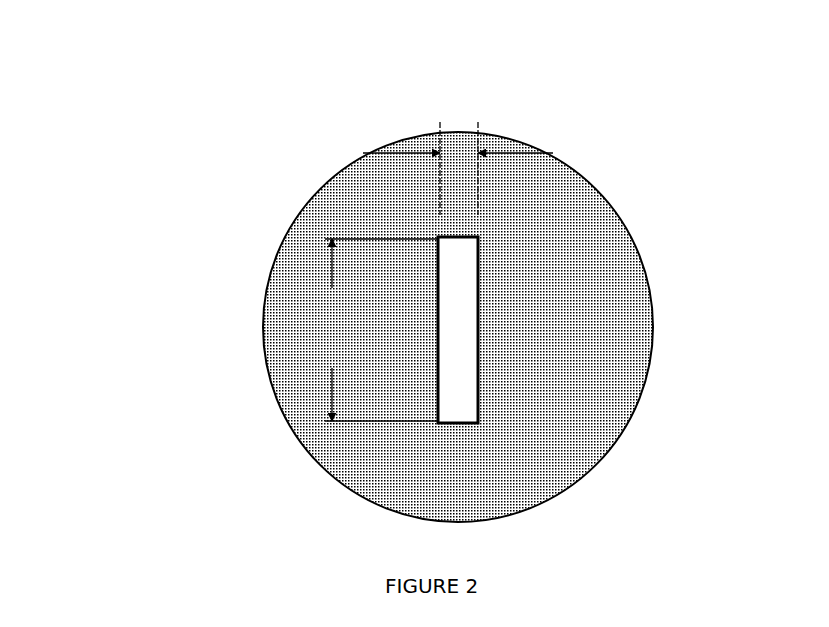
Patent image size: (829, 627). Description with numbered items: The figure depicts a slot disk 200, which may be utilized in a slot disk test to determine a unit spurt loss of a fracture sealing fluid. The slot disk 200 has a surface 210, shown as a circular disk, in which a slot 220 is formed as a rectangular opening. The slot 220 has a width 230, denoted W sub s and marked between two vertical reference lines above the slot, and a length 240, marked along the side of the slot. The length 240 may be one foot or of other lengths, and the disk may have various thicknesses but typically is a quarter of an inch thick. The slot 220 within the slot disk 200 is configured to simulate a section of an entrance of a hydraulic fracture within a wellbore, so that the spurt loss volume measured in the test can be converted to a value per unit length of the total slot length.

The slot disk 200 is at (160, 135).
The surface 210 is at (570, 205).
The slot 220 is at (458, 296).
The width 230 is at (472, 80).
The length 240 is at (325, 322).